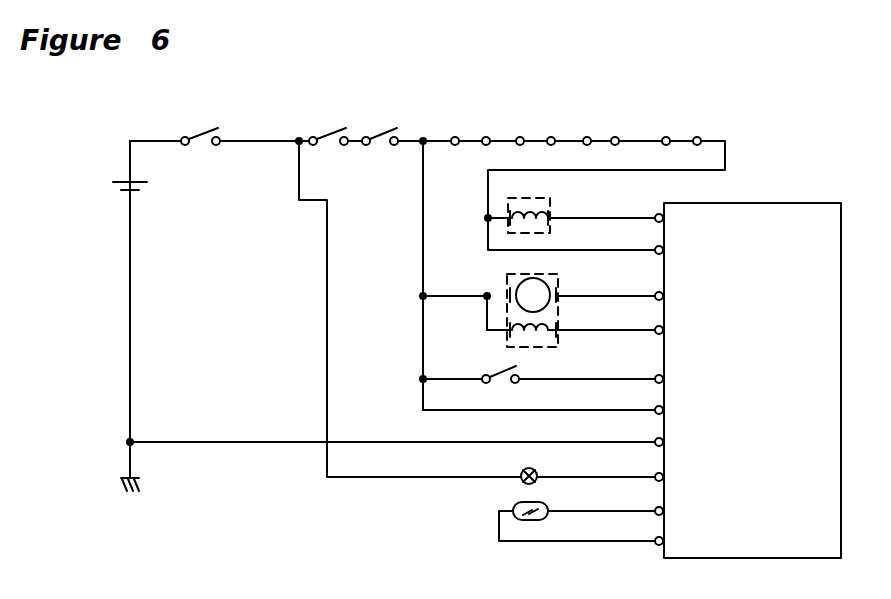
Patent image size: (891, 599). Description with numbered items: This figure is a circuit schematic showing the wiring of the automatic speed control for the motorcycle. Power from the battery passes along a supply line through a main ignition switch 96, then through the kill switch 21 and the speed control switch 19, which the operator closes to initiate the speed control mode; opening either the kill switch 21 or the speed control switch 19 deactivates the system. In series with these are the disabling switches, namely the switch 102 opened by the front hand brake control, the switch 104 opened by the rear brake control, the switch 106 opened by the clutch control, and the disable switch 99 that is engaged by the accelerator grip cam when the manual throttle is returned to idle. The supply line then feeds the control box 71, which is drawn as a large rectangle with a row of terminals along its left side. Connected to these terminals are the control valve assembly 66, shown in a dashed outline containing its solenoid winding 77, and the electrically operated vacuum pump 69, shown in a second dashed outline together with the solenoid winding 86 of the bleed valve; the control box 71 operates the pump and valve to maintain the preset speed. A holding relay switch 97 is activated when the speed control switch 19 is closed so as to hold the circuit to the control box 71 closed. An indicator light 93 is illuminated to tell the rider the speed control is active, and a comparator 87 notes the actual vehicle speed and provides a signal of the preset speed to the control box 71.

The main ignition switch 96 is at (200, 130).
The kill switch 21 is at (332, 130).
The speed control switch 19 is at (380, 130).
The switch 102 is at (467, 140).
The switch 104 is at (538, 140).
The switch 106 is at (600, 140).
The disable switch 99 is at (684, 140).
The control valve assembly 66 is at (550, 214).
The solenoid winding 77 is at (529, 219).
The vacuum pump 69 is at (557, 296).
The solenoid winding 86 is at (533, 322).
The holding relay switch 97 is at (498, 371).
The indicator light 93 is at (524, 471).
The comparator 87 is at (517, 504).
The control box 71 is at (841, 315).